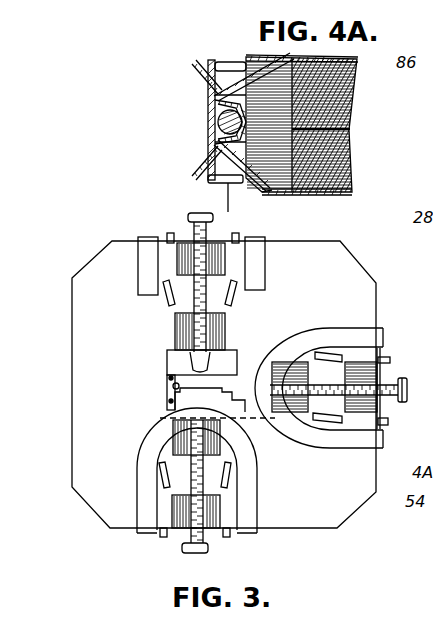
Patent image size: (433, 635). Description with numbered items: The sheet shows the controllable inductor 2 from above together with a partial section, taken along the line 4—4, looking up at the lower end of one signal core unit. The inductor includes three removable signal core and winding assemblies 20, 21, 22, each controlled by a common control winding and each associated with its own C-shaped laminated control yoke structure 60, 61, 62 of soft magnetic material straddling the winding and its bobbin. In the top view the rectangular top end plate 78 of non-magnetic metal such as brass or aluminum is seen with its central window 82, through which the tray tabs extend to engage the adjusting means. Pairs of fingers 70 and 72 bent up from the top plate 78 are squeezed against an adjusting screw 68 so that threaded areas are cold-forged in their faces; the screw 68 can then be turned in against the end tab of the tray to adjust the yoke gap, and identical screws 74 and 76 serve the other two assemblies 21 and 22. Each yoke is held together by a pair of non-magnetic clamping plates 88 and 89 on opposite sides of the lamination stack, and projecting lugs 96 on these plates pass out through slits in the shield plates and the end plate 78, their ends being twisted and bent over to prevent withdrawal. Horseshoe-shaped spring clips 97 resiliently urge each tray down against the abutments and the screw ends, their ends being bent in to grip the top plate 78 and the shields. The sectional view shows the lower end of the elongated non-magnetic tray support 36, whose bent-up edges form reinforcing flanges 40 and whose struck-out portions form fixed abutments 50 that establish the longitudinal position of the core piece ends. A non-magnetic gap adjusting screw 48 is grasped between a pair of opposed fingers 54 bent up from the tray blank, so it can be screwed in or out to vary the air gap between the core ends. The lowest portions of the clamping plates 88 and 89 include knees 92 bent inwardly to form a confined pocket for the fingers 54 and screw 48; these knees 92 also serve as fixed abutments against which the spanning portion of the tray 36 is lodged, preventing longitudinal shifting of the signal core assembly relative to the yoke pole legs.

In FIG. 4A, the clamp assembly 2 is at (50, 12).
In FIG. 3, the section line 4 is at (222, 411).
In FIG. 4A, the signal core and winding assembly 20 is at (208, 147).
In FIG. 3, the signal core and winding assembly 20 is at (250, 349).
In FIG. 3, the signal core and winding assembly 21 is at (165, 400).
In FIG. 3, the signal core and winding assembly 22 is at (168, 358).
In FIG. 4A, the tray support 36 is at (236, 191).
In FIG. 4A, the reinforcing flange 40 is at (222, 70).
In FIG. 4A, the screw 48 is at (210, 120).
In FIG. 4A, the fixed abutment 50 is at (210, 62).
In FIG. 4A, the finger 54 is at (350, 128).
In FIG. 4A, the control yoke structure 60 is at (356, 100).
In FIG. 3, the control yoke structure 60 is at (386, 372).
In FIG. 3, the control yoke structure 61 is at (215, 530).
In FIG. 4A, the control yoke structure 62 is at (227, 211).
In FIG. 3, the adjusting screw 68 is at (405, 383).
In FIG. 3, the finger 70 is at (297, 382).
In FIG. 3, the finger 72 is at (363, 391).
In FIG. 3, the screw 74 is at (193, 549).
In FIG. 3, the screw 76 is at (189, 216).
In FIG. 3, the top end plate 78 is at (82, 287).
In FIG. 3, the central window 82 is at (170, 382).
In FIG. 4A, the clamping plate 88 is at (355, 192).
In FIG. 3, the clamping plate 88 is at (220, 239).
In FIG. 4A, the clamping plate 89 is at (285, 54).
In FIG. 3, the clamping plate 89 is at (167, 237).
In FIG. 4A, the knee 92 is at (193, 77).
In FIG. 3, the projecting lug 96 is at (163, 303).
In FIG. 3, the spring clip 97 is at (337, 332).